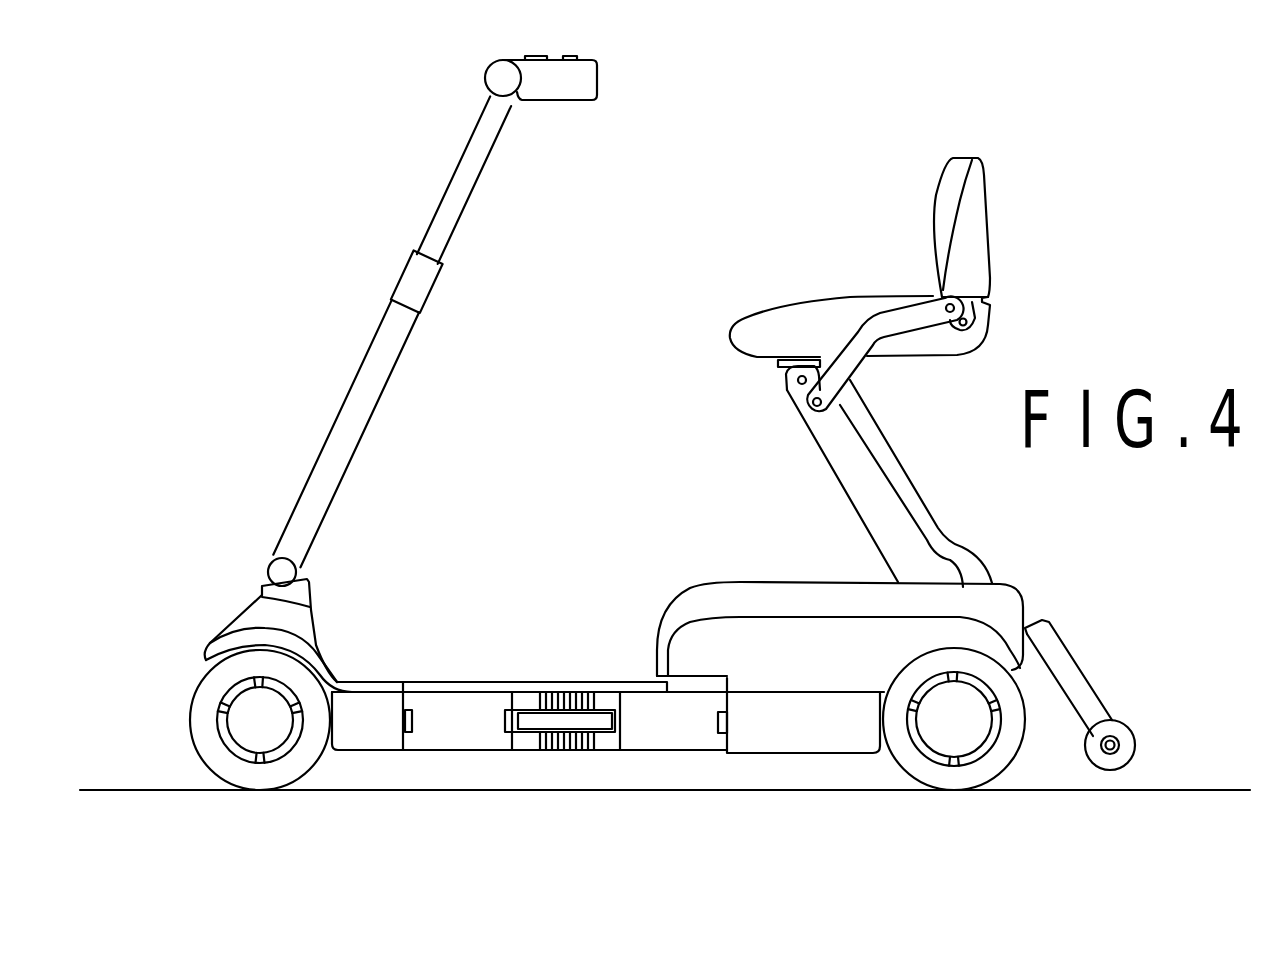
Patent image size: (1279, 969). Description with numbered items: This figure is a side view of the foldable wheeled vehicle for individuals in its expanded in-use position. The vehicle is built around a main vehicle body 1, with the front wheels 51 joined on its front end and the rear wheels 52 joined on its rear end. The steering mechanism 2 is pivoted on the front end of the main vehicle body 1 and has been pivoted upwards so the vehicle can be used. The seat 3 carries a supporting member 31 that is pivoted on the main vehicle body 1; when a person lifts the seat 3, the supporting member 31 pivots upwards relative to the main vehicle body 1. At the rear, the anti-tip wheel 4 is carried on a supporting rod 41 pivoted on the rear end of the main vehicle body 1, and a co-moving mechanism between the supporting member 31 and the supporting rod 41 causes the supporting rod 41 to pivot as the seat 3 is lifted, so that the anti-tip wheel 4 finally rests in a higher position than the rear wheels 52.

The main vehicle body 1 is at (655, 732).
The steering mechanism 2 is at (453, 200).
The seat 3 is at (972, 200).
The supporting member 31 is at (845, 454).
The anti-tip wheel 4 is at (1128, 753).
The supporting rod 41 is at (1072, 697).
The front wheels 51 is at (258, 773).
The rear wheels 52 is at (962, 775).